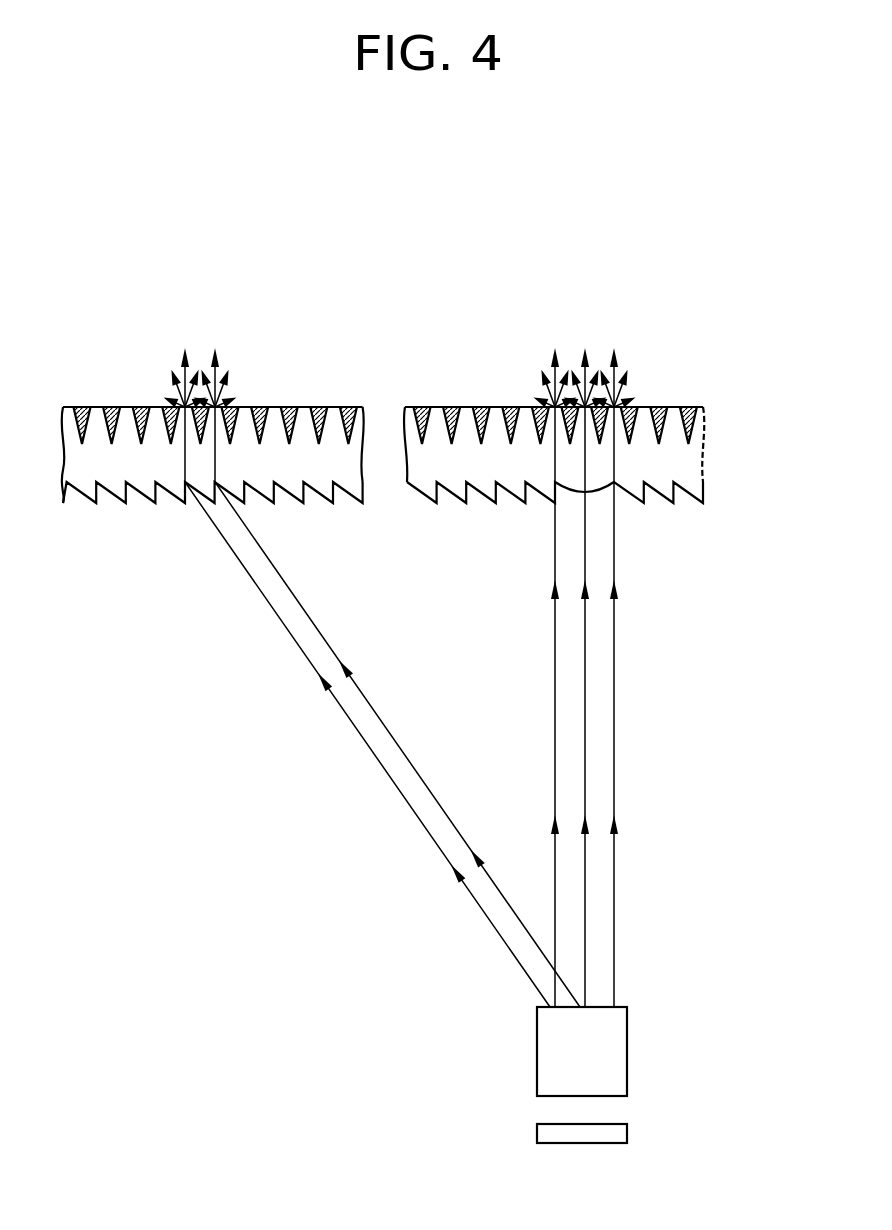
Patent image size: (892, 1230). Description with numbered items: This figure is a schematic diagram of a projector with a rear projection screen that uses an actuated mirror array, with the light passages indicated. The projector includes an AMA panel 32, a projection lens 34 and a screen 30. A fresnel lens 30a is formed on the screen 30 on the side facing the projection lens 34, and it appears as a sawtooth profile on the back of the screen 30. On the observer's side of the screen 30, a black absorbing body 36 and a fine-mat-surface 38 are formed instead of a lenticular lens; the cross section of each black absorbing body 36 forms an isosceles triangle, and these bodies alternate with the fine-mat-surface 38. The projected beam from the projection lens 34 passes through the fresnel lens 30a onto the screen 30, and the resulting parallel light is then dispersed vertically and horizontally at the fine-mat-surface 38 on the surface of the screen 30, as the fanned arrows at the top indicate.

The screen 30 is at (433, 459).
The fresnel lens 30a is at (660, 498).
The AMA panel 32 is at (627, 1132).
The projection lens 34 is at (627, 1050).
The black absorbing body 36 is at (422, 405).
The fine-mat-surface 38 is at (500, 405).